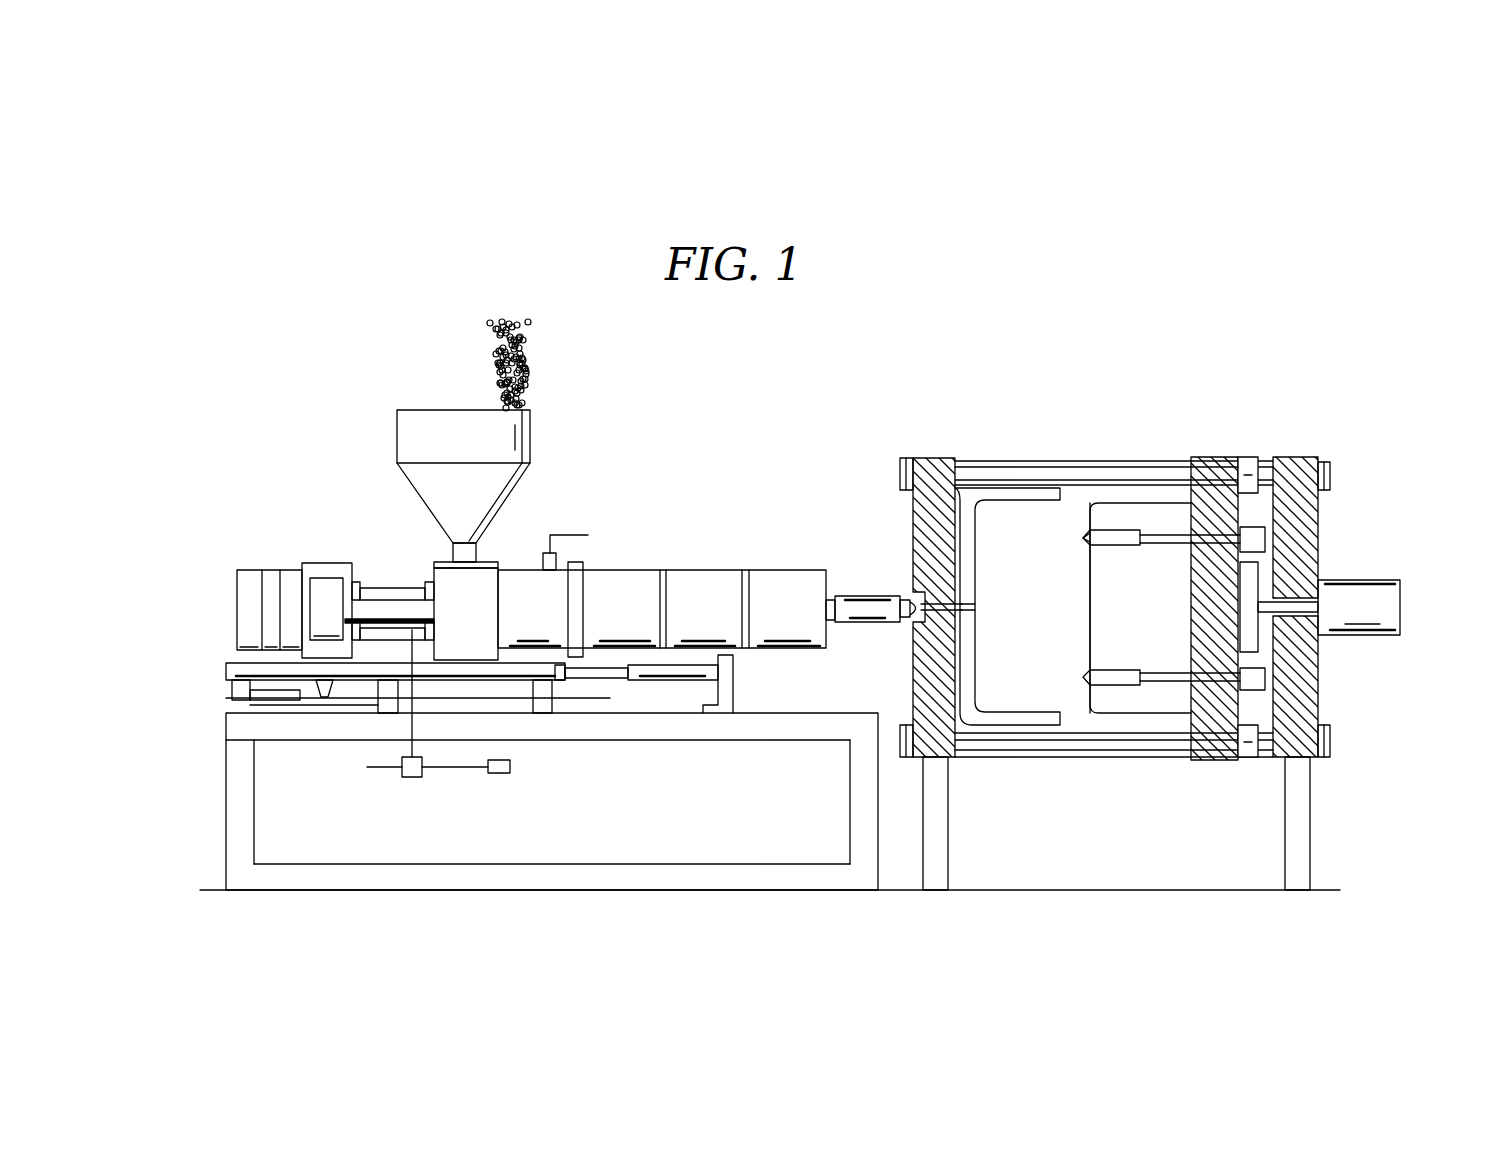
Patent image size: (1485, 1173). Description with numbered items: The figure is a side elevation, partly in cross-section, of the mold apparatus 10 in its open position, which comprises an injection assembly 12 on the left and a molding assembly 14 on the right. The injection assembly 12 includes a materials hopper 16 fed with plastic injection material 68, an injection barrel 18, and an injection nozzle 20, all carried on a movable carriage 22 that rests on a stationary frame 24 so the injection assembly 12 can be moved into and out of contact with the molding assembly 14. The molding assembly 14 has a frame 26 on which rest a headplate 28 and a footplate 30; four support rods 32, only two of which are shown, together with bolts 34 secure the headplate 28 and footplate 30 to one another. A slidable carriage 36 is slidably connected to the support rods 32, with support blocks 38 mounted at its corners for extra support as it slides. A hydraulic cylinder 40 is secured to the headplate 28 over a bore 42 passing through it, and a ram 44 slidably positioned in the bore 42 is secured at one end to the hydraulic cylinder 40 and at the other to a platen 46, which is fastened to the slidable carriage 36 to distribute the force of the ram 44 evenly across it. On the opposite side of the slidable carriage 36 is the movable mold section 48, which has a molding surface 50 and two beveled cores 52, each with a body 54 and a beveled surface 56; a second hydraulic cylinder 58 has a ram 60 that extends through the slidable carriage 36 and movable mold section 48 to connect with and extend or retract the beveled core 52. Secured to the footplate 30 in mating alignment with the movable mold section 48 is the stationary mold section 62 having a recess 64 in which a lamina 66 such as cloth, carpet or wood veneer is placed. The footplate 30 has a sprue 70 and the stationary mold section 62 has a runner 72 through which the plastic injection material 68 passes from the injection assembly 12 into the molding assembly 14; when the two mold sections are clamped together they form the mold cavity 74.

The mold apparatus 10 is at (763, 451).
The injection assembly 12 is at (590, 478).
The molding assembly 14 is at (888, 431).
The materials hopper 16 is at (397, 447).
The injection barrel 18 is at (703, 572).
The injection nozzle 20 is at (849, 594).
The movable carriage 22 is at (226, 672).
The stationary frame 24 is at (443, 863).
The frame 26 is at (1312, 840).
The headplate 28 is at (1350, 688).
The footplate 30 is at (913, 678).
The support rods 32 is at (1168, 461).
The bolts 34 is at (1320, 468).
The slidable carriage 36 is at (1218, 457).
The support blocks 38 is at (1248, 760).
The hydraulic cylinder 40 is at (1401, 607).
The bore 42 is at (1291, 605).
The ram 44 is at (1302, 617).
The platen 46 is at (1291, 597).
The movable mold section 48 is at (1160, 714).
The molding surface 50 is at (1085, 610).
The beveled cores 52 is at (1148, 671).
The body 54 is at (1100, 534).
The beveled surface 56 is at (1083, 539).
The hydraulic cylinder 58 is at (1267, 692).
The ram 60 is at (1160, 686).
The stationary mold section 62 is at (1021, 758).
The recess 64 is at (996, 642).
The lamina 66 is at (975, 601).
The plastic injection material 68 is at (532, 385).
The sprue 70 is at (916, 627).
The runner 72 is at (937, 606).
The mold cavity 74 is at (1032, 534).